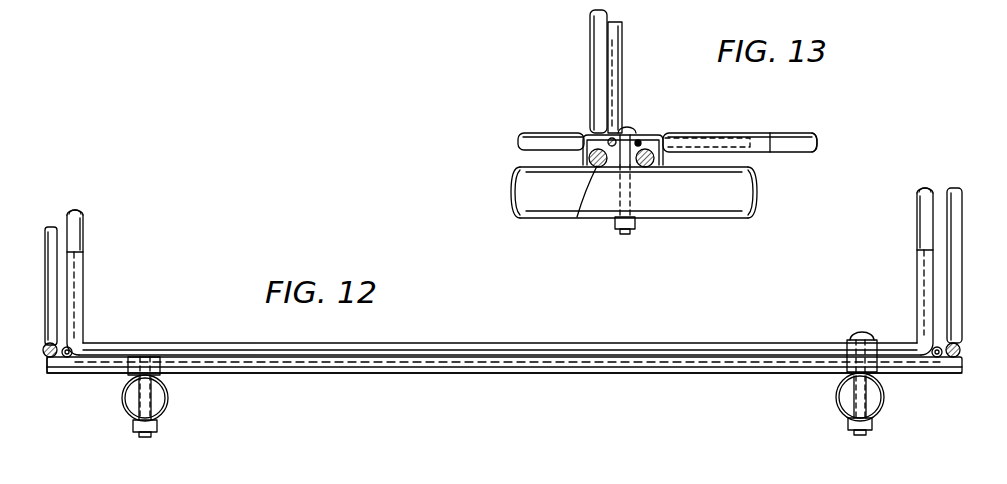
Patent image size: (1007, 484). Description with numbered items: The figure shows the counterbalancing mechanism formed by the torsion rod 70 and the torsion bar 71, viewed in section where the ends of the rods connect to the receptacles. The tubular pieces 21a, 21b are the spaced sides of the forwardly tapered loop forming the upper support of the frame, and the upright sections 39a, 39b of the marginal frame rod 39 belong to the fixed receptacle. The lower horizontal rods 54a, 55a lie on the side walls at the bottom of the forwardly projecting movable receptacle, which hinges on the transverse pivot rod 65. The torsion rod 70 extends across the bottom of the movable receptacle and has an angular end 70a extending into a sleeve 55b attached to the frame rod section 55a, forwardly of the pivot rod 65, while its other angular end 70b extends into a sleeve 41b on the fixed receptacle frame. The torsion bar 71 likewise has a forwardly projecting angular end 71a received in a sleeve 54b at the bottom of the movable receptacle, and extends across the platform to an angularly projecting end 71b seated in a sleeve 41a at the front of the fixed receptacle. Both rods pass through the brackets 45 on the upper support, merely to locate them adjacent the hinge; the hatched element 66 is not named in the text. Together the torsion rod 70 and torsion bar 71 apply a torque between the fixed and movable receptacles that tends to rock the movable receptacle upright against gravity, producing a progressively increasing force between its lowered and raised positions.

In FIG. 12, the tubular piece 21a is at (168, 400).
In FIG. 12, the tubular piece 21b is at (880, 400).
In FIG. 13, the tubular piece 21b is at (700, 213).
In FIG. 13, the marginal frame rod 39 is at (576, 224).
In FIG. 12, the upright section of marginal frame rod 39a is at (80, 213).
In FIG. 12, the upright section of marginal frame rod 39b is at (917, 210).
In FIG. 13, the upright section of marginal frame rod 39b is at (590, 62).
In FIG. 12, the sleeve 41a is at (924, 305).
In FIG. 13, the sleeve 41a is at (622, 90).
In FIG. 12, the sleeve 41b is at (85, 280).
In FIG. 12, the bracket 45 is at (150, 362).
In FIG. 13, the bracket 45 is at (618, 233).
In FIG. 12, the lower horizontal rod 54a is at (47, 245).
In FIG. 12, the sleeve 54b is at (55, 373).
In FIG. 12, the lower horizontal rod 55a is at (960, 252).
In FIG. 13, the lower horizontal rod 55a is at (797, 140).
In FIG. 13, the sleeve 55b is at (748, 133).
In FIG. 12, the transverse pivot rod 65 is at (690, 372).
In FIG. 13, the transverse pivot rod 65 is at (649, 166).
In FIG. 13, the bearing roller 66 is at (670, 155).
In FIG. 12, the torsion rod 70 is at (486, 345).
In FIG. 13, the torsion rod 70 is at (635, 143).
In FIG. 13, the angular end of torsion rod 70a is at (750, 148).
In FIG. 12, the angular end of torsion rod 70b is at (78, 263).
In FIG. 12, the torsion bar 71 is at (645, 355).
In FIG. 13, the torsion bar 71 is at (610, 130).
In FIG. 12, the forwardly projecting angular end 71a is at (62, 360).
In FIG. 12, the angularly projecting end 71b is at (917, 268).
In FIG. 13, the angularly projecting end 71b is at (613, 48).